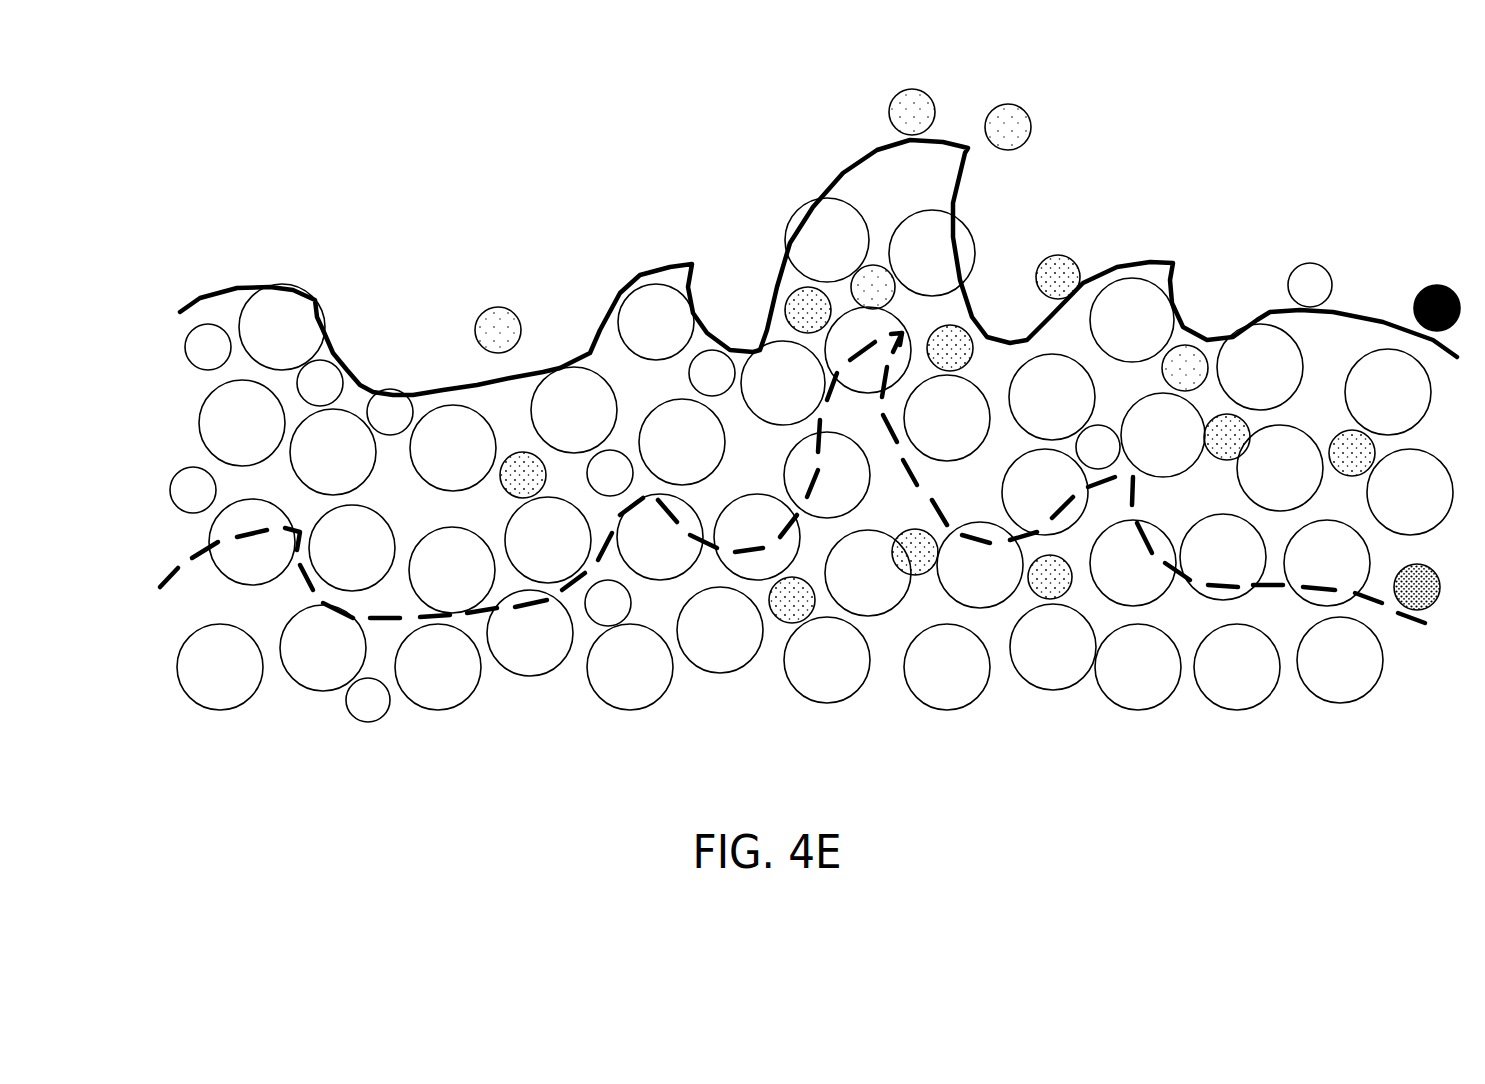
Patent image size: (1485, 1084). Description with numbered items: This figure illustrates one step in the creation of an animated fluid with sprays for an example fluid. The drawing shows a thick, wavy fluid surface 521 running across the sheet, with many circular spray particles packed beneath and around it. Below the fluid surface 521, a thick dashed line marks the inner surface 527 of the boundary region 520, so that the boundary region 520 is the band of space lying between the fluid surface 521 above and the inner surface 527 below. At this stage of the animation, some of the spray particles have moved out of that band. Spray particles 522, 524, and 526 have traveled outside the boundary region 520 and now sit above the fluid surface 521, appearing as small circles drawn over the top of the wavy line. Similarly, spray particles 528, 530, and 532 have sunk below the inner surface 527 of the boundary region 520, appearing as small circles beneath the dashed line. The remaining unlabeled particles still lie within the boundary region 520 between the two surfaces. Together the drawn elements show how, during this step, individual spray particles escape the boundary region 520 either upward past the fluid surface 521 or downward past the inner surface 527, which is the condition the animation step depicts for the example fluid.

The boundary region 520 is at (148, 462).
The fluid surface 521 is at (267, 289).
The spray particle 522 is at (510, 306).
The spray particle 524 is at (913, 86).
The spray particle 526 is at (1023, 106).
The inner surface 527 is at (162, 590).
The spray particle 528 is at (367, 724).
The spray particle 530 is at (1038, 597).
The spray particle 532 is at (595, 626).